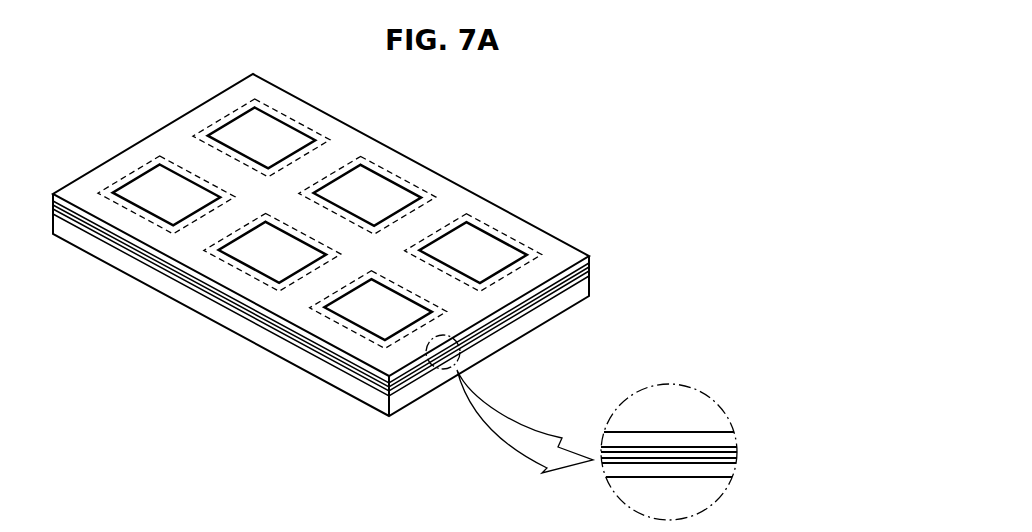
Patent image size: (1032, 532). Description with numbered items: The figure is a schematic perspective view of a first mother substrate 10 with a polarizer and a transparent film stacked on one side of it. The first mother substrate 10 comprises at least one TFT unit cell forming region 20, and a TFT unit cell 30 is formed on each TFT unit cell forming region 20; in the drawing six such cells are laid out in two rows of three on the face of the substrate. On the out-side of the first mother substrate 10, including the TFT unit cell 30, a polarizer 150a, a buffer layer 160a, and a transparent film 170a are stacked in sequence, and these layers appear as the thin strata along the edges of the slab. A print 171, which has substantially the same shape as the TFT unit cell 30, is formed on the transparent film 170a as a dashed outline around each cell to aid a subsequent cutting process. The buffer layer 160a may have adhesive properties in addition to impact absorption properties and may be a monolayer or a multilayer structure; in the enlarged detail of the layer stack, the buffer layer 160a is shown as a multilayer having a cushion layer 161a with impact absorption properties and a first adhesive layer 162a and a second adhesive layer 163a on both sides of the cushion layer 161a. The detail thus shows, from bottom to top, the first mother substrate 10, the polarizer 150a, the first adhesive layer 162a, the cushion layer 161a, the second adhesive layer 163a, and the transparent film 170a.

The first mother substrate 10 is at (590, 287).
The TFT unit cell forming region 20 is at (528, 243).
The TFT unit cell 30 is at (177, 203).
The polarizer 150a is at (590, 278).
The buffer layer 160a is at (590, 266).
The cushion layer 161a is at (738, 453).
The first adhesive layer 162a is at (738, 459).
The second adhesive layer 163a is at (738, 447).
The transparent film 170a is at (590, 259).
The print 171 is at (503, 230).